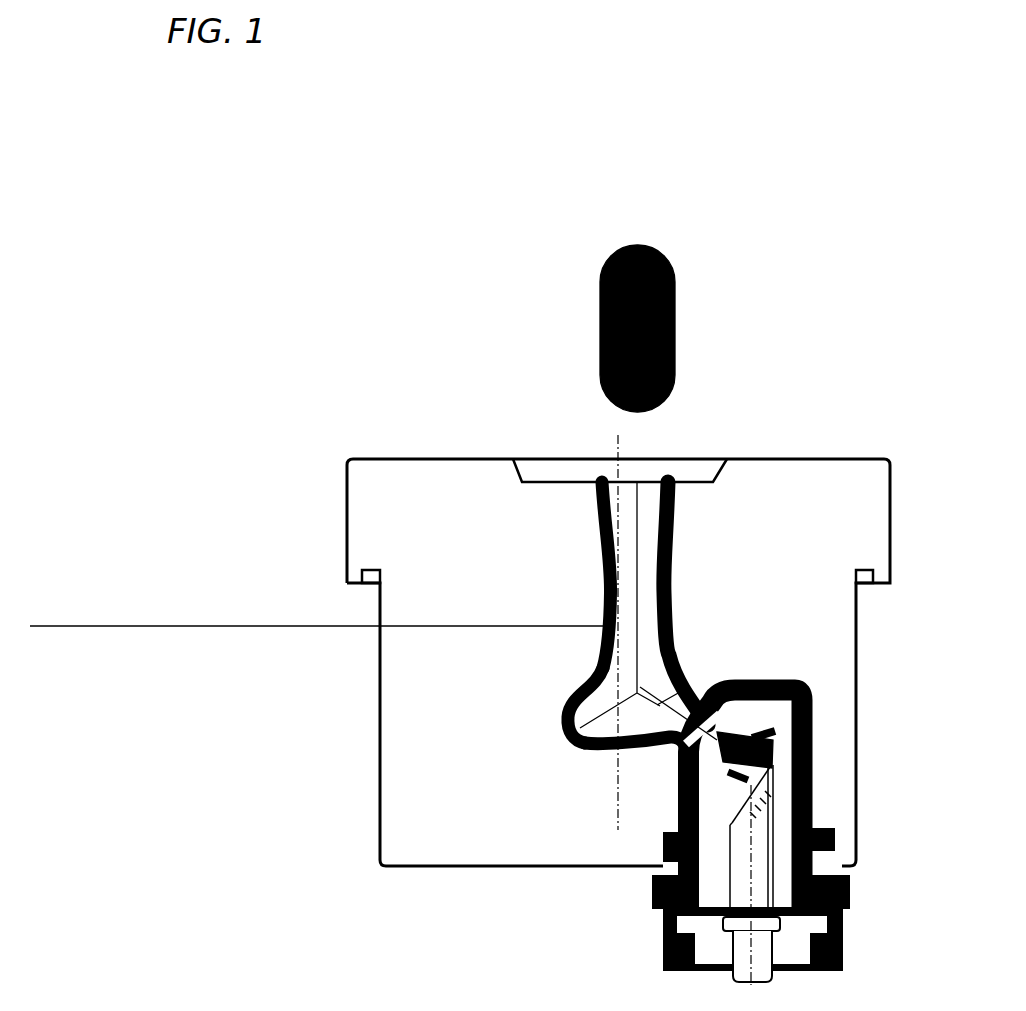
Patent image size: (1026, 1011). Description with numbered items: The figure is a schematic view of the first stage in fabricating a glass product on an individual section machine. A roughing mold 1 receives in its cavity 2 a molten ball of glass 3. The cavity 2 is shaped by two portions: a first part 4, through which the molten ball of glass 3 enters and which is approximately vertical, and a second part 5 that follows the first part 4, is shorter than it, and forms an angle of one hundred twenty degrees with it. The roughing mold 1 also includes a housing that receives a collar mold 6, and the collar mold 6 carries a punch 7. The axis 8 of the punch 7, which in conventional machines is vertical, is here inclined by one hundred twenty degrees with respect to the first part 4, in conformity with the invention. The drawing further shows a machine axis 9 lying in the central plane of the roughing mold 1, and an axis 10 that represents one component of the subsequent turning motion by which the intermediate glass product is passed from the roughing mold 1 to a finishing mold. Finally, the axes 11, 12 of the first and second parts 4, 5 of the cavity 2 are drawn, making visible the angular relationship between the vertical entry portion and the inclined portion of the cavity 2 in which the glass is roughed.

The roughing mold 1 is at (815, 457).
The cavity 2 is at (673, 573).
The molten ball of glass 3 is at (672, 284).
The first part of the cavity 4 is at (601, 595).
The second part of the cavity 5 is at (560, 710).
The collar mold 6 is at (813, 762).
The punch 7 is at (760, 727).
The axis of the punch 8 is at (686, 675).
The machine axis 9 is at (618, 866).
The axis of turning motion 10 is at (203, 627).
The axis of the first part 11 is at (637, 510).
The axis of the second part 12 is at (582, 750).